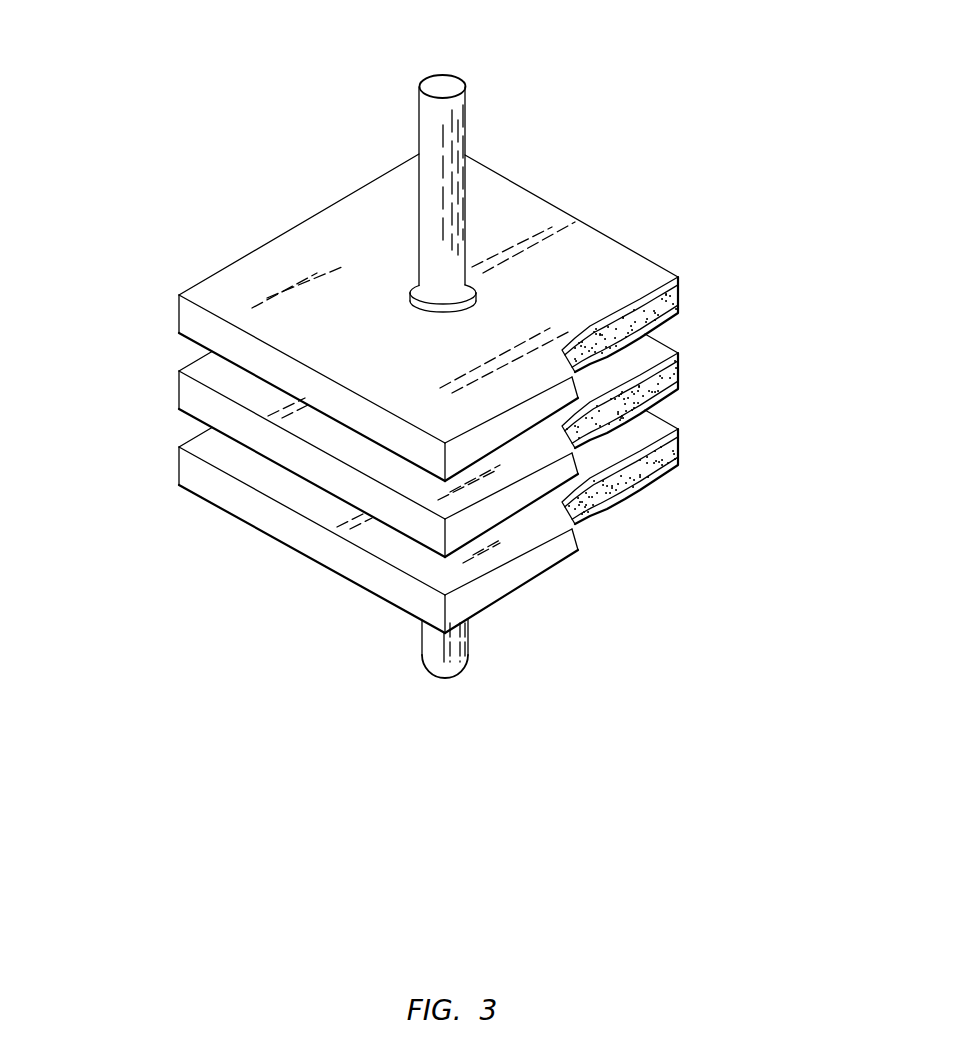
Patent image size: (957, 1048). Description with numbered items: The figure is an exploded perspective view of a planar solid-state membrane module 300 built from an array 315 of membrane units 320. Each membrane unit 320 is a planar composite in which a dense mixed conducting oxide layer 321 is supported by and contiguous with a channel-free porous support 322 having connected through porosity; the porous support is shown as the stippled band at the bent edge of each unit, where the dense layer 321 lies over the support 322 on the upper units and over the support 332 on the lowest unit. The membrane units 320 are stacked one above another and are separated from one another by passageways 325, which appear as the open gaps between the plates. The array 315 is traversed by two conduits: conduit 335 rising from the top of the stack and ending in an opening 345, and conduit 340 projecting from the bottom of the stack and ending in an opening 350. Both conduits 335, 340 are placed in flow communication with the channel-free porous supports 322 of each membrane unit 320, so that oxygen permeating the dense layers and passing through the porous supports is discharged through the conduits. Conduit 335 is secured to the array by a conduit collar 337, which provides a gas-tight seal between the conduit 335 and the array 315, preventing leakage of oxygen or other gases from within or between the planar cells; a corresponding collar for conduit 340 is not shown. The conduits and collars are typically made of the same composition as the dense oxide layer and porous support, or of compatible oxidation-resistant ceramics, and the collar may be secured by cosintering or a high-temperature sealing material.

The planar solid-state membrane module 300 is at (426, 371).
The array of membrane units 315 is at (502, 170).
The membrane unit 320 is at (352, 385).
The dense mixed conducting oxide layer 321 is at (694, 385).
The channel-free porous support 322 is at (680, 300).
The contact coating on lower tab 332 is at (680, 457).
The passageway 325 is at (413, 482).
The conduit 335 is at (418, 150).
The conduit collar 337 is at (415, 293).
The conduit 340 is at (413, 674).
The opening 345 is at (445, 87).
The opening 350 is at (442, 680).